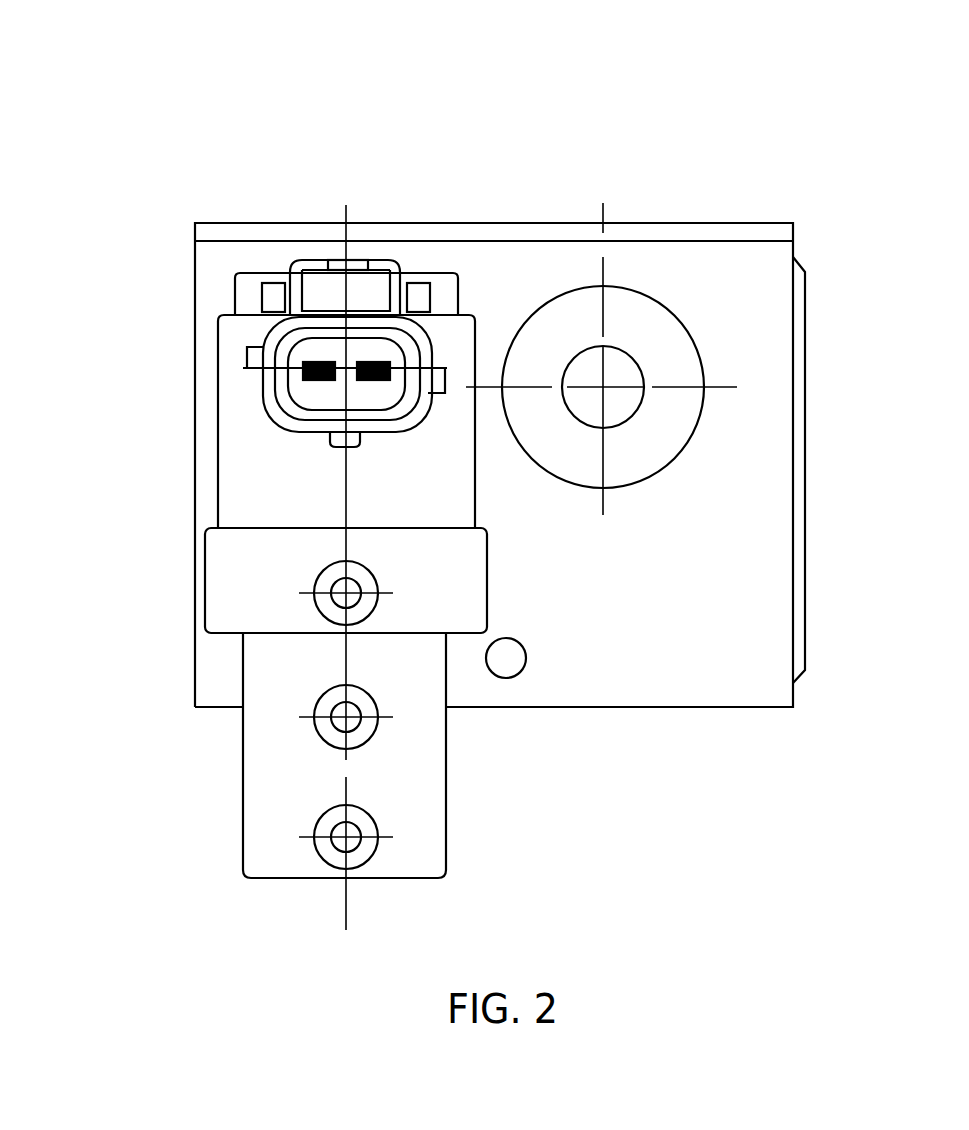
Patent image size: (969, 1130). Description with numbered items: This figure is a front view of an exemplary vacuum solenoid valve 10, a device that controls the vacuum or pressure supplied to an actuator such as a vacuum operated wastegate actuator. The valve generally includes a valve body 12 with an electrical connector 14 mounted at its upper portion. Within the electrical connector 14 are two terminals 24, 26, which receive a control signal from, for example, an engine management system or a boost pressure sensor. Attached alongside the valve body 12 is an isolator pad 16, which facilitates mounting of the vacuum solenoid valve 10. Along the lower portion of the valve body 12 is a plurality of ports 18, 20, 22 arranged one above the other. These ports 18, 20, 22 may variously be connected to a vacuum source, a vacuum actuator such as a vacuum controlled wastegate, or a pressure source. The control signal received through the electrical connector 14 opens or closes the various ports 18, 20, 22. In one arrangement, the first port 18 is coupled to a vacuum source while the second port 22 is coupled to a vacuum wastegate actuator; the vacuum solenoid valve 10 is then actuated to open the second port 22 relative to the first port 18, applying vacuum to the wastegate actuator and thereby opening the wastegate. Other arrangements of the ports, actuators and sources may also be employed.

The vacuum solenoid valve 10 is at (185, 100).
The valve body 12 is at (218, 462).
The electrical connector 14 is at (263, 338).
The isolator pad 16 is at (805, 300).
The first port 18 is at (317, 608).
The port 20 is at (313, 735).
The second port 22 is at (317, 857).
The terminal 24 is at (325, 360).
The terminal 26 is at (373, 360).